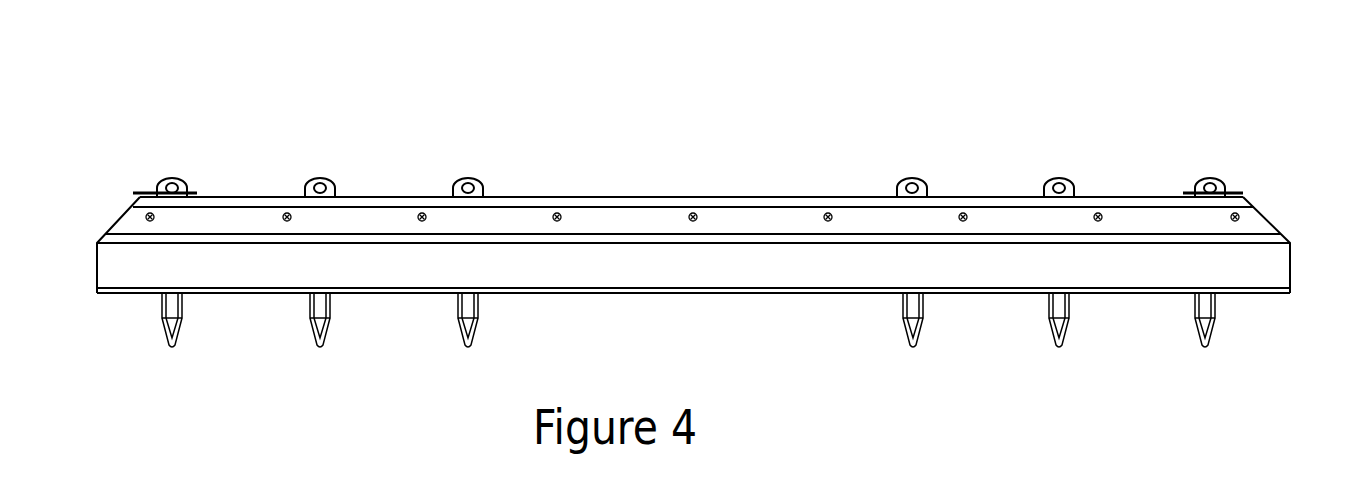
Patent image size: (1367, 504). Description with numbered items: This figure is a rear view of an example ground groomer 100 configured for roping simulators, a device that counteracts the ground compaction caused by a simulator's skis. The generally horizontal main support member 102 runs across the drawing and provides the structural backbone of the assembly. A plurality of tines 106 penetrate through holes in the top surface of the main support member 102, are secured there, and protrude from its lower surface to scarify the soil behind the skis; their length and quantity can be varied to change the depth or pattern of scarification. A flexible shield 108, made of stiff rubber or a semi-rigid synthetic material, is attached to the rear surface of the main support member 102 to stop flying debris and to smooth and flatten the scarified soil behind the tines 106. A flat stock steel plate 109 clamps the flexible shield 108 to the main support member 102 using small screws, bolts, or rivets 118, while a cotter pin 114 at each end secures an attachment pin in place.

The ground groomer 100 is at (707, 224).
The main support member 102 is at (691, 110).
The tines 106 is at (458, 330).
The flexible shield 108 is at (693, 278).
The flat stock steel plate 109 is at (693, 283).
The cotter pin 114 is at (713, 162).
The screws, bolts, or rivets 118 is at (422, 213).